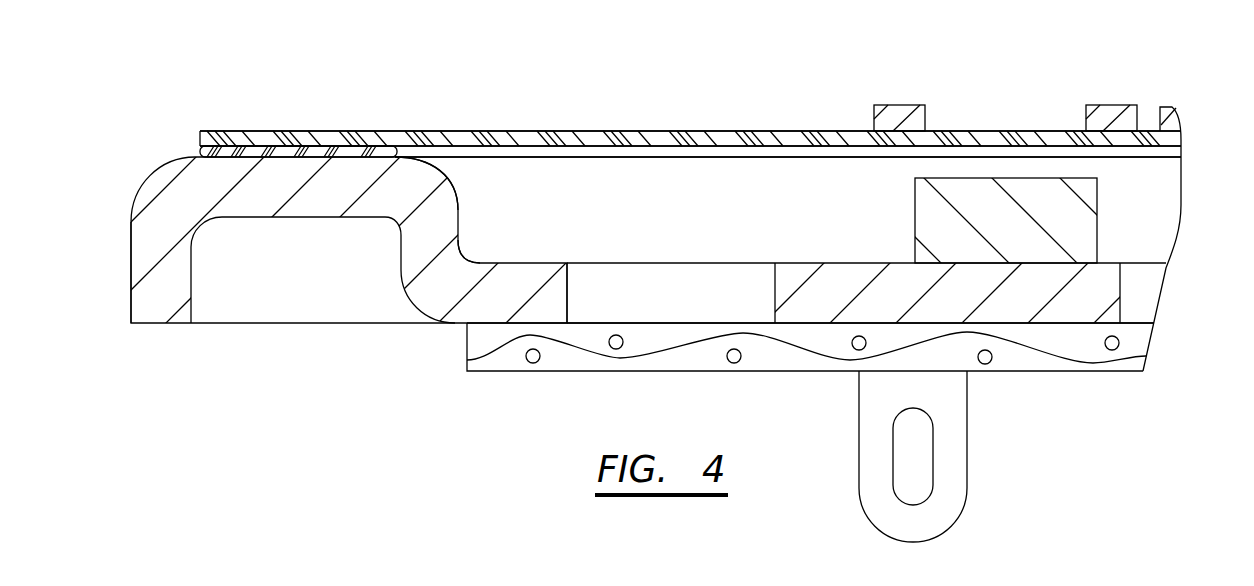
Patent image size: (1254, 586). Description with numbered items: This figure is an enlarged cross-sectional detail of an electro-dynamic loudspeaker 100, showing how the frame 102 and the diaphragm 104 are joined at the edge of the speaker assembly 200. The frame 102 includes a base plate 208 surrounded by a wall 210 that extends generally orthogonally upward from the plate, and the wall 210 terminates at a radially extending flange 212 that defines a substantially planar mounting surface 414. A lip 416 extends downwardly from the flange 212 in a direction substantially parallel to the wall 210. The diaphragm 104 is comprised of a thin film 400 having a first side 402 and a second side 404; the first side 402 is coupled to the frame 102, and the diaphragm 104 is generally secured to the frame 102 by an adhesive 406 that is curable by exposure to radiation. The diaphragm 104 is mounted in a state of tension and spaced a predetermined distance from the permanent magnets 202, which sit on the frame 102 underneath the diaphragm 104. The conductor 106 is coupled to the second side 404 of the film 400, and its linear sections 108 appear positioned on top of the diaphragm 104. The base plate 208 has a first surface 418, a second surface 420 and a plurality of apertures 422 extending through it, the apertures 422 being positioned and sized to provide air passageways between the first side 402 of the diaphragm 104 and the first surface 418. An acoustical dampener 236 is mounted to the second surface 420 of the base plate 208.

The electronic device assembly 100 is at (430, 74).
The frame 102 is at (135, 140).
The diaphragm 104 is at (584, 122).
The conductor 106 is at (1148, 72).
The linear sections 108 is at (897, 106).
The chassis body 200 is at (800, 253).
The permanent magnets 202 is at (915, 224).
The base plate 208 is at (540, 255).
The wall 210 is at (452, 184).
The radially extending flange 212 is at (243, 217).
The acoustical dampener 236 is at (1063, 385).
The thin film 400 is at (723, 143).
The first side 402 is at (641, 147).
The second side 404 is at (788, 130).
The adhesive 406 is at (200, 152).
The mounting surface 414 is at (280, 157).
The lip 416 is at (130, 247).
The first surface 418 is at (473, 252).
The second surface 420 is at (530, 324).
The apertures 422 is at (567, 296).